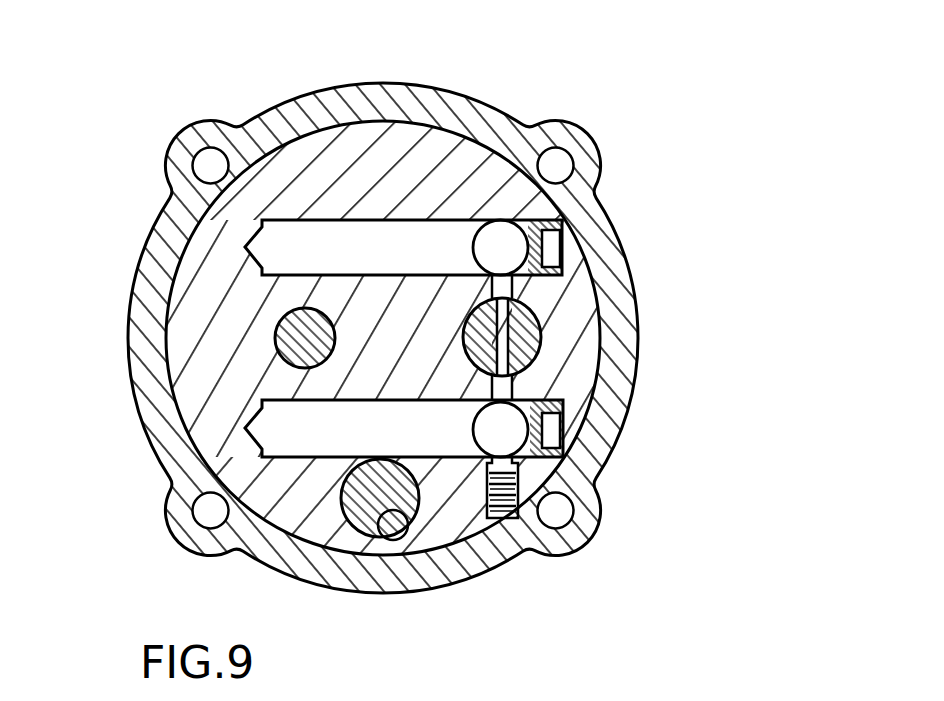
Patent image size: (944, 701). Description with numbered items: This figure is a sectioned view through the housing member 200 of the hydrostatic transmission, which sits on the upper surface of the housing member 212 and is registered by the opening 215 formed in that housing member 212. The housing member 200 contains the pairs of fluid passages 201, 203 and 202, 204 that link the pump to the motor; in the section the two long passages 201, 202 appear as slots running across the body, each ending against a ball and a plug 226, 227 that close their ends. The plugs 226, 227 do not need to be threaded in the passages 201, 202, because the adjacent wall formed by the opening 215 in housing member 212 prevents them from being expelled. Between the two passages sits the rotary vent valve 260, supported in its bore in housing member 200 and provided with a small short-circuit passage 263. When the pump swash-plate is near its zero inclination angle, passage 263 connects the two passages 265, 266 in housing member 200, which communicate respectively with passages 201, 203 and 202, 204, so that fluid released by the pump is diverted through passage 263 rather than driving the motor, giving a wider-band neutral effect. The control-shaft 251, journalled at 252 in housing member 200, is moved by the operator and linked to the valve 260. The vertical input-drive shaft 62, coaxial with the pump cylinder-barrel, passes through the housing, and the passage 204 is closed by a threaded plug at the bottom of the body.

The housing member 212 is at (300, 104).
The housing member 200 is at (363, 173).
The fluid passage 203 is at (520, 185).
The plug 226 is at (543, 226).
The opening 215 is at (562, 245).
The passage 265 is at (505, 290).
The rotary vent valve 260 is at (540, 333).
The small passage 263 is at (512, 360).
The passage 266 is at (520, 393).
The plug 227 is at (560, 432).
The fluid passage 204 is at (515, 470).
The input-drive shaft 62 is at (270, 342).
The control-shaft 251 is at (377, 490).
The journal 252 is at (403, 528).
The fluid passage 201 is at (345, 264).
The fluid passage 202 is at (345, 445).